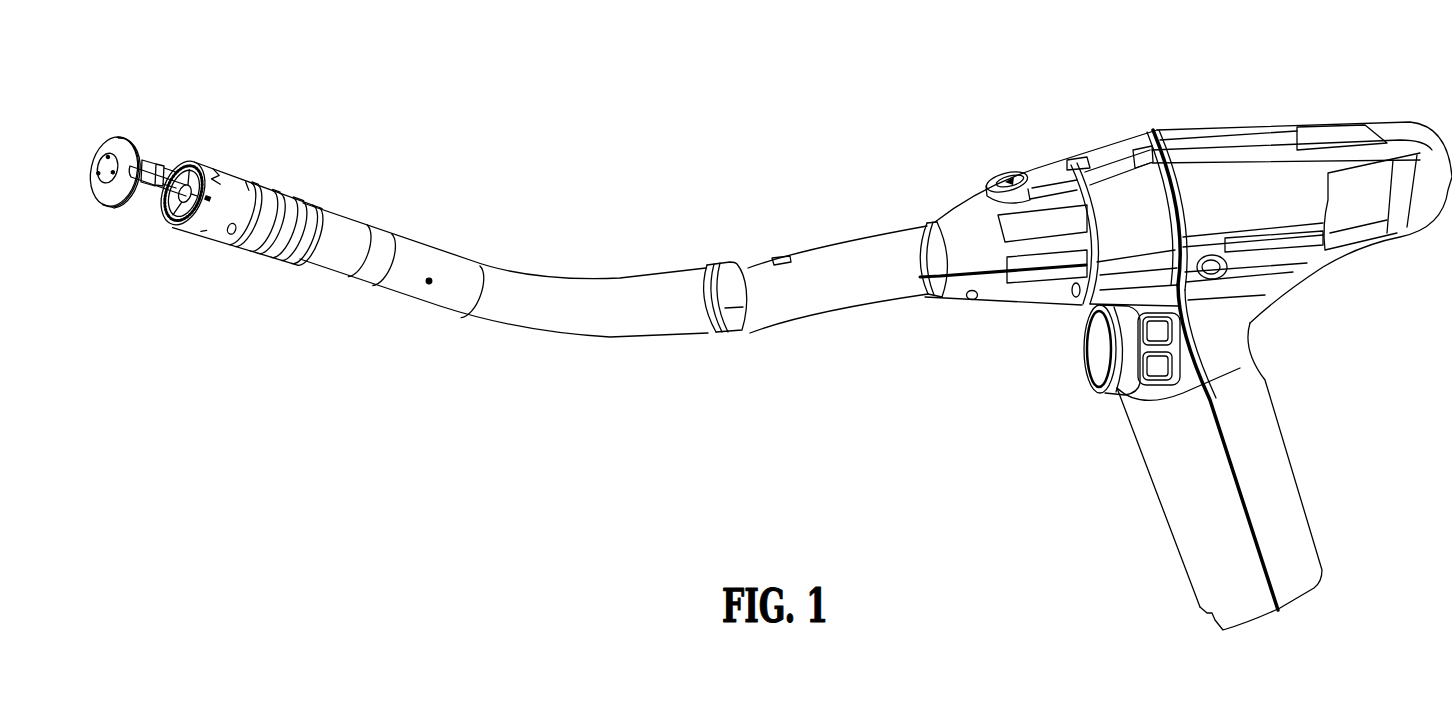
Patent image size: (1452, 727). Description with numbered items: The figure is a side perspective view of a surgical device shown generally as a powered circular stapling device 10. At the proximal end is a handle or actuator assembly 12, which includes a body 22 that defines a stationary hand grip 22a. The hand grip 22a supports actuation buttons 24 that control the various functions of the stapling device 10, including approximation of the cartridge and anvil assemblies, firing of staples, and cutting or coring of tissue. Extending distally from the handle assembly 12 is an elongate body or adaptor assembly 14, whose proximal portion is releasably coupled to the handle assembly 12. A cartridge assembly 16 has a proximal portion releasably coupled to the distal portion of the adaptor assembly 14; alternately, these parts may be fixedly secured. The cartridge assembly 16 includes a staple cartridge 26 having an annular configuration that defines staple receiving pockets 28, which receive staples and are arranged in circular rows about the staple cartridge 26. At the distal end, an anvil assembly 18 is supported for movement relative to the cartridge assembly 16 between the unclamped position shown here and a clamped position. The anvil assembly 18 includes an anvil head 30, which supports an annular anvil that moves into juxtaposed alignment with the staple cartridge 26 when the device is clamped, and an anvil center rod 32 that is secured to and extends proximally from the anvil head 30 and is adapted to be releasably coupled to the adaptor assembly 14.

The powered circular stapling device 10 is at (743, 130).
The handle assembly 12 is at (1202, 132).
The adaptor assembly 14 is at (592, 272).
The cartridge assembly 16 is at (228, 158).
The anvil assembly 18 is at (115, 124).
The body 22 is at (1268, 128).
The stationary hand grip 22a is at (1278, 478).
The actuation buttons 24 is at (1080, 415).
The staple cartridge 26 is at (180, 162).
The staple receiving pockets 28 is at (176, 222).
The anvil head 30 is at (105, 205).
The anvil center rod 32 is at (147, 192).